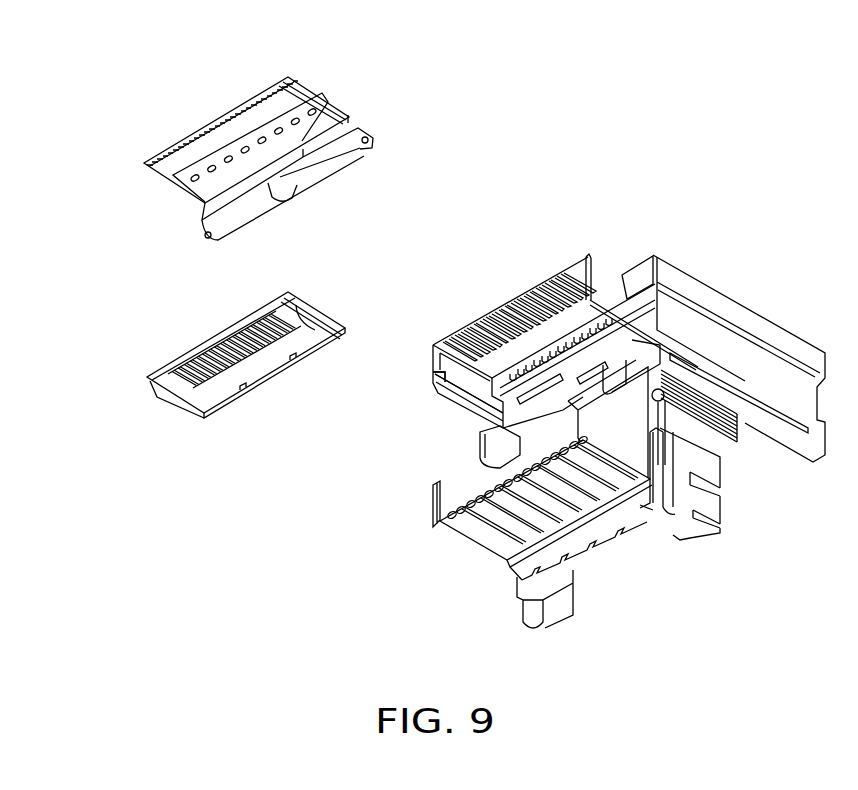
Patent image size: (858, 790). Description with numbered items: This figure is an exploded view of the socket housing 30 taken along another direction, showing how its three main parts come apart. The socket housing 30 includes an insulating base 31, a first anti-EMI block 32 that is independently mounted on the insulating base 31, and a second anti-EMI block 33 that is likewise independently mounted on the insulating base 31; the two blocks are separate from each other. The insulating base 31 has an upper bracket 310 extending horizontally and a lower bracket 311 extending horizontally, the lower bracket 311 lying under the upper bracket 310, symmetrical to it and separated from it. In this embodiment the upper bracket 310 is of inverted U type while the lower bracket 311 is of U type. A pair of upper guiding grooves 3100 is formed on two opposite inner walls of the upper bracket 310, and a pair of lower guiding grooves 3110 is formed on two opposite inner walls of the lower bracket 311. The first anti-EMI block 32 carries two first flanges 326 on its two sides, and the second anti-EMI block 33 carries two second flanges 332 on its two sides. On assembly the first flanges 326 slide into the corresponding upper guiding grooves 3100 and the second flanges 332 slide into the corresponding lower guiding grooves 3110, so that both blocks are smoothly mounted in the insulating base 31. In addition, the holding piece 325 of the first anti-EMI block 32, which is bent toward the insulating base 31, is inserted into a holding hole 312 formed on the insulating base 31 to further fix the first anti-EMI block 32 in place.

The socket housing 30 is at (570, 61).
The insulating base 31 is at (727, 294).
The first anti-EMI block 32 is at (232, 134).
The second anti-EMI block 33 is at (238, 328).
The upper bracket 310 is at (524, 330).
The lower bracket 311 is at (530, 528).
The holding hole 312 is at (498, 430).
The holding piece 325 is at (294, 196).
The first flanges 326 is at (330, 104).
The second flanges 332 is at (298, 294).
The upper guiding grooves 3100 is at (433, 374).
The lower guiding grooves 3110 is at (432, 487).